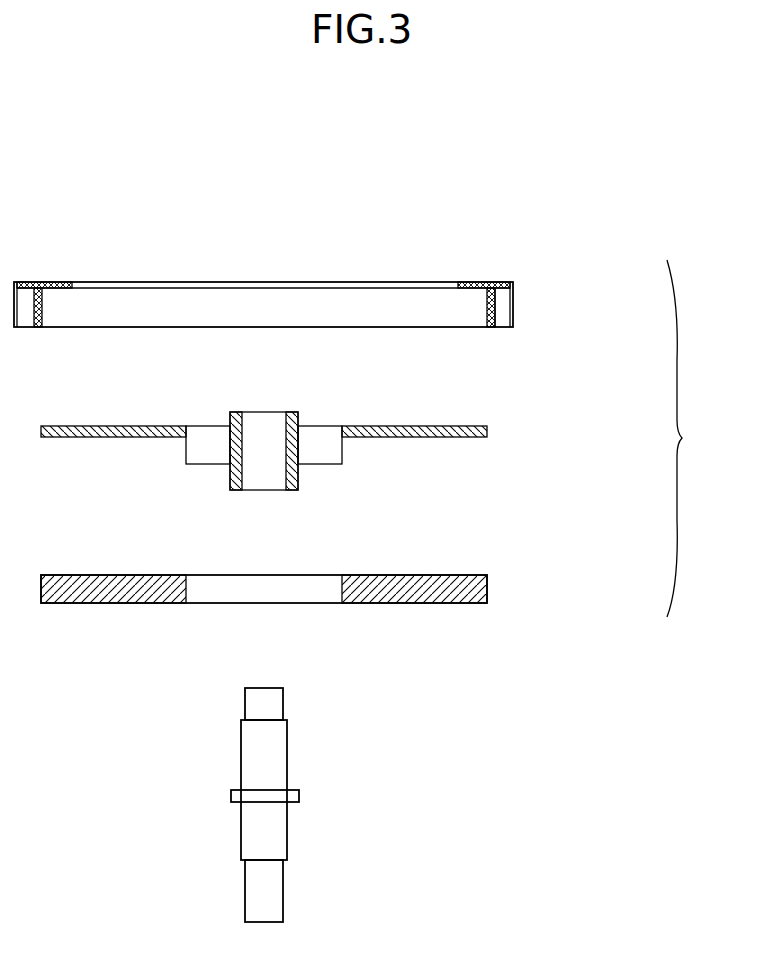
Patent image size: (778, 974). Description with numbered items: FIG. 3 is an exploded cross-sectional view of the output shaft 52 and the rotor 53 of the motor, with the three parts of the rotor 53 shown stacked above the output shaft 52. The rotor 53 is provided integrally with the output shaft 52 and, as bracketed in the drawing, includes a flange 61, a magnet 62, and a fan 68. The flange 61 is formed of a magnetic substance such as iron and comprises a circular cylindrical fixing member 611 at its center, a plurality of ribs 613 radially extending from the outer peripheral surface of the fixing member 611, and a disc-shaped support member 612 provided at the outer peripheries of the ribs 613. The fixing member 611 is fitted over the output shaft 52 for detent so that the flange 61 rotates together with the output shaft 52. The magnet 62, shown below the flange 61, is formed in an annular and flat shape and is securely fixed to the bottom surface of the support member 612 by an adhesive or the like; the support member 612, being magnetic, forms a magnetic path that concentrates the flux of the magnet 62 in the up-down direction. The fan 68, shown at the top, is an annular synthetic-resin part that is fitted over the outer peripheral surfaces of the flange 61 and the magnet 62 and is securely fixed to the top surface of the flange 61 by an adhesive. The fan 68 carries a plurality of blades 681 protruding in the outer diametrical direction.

The fan 68 is at (334, 318).
The blades 681 is at (500, 318).
The flange 61 is at (347, 444).
The fixing member 611 is at (298, 413).
The support member 612 is at (420, 426).
The ribs 613 is at (320, 452).
The magnet 62 is at (577, 580).
The output shaft 52 is at (577, 824).
The rotor 53 is at (696, 438).